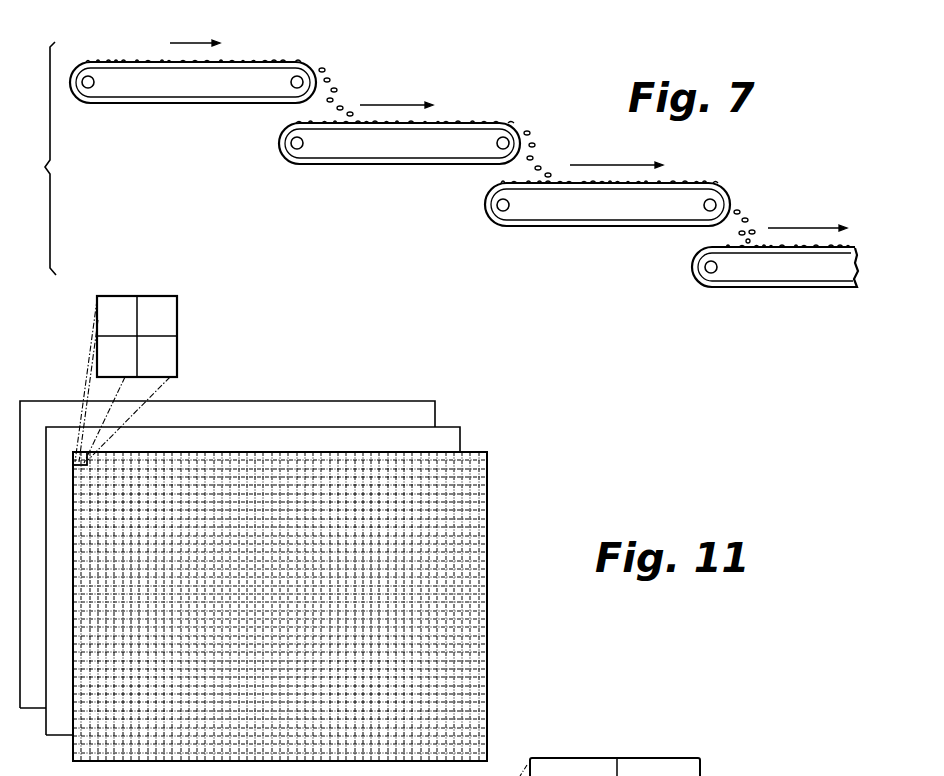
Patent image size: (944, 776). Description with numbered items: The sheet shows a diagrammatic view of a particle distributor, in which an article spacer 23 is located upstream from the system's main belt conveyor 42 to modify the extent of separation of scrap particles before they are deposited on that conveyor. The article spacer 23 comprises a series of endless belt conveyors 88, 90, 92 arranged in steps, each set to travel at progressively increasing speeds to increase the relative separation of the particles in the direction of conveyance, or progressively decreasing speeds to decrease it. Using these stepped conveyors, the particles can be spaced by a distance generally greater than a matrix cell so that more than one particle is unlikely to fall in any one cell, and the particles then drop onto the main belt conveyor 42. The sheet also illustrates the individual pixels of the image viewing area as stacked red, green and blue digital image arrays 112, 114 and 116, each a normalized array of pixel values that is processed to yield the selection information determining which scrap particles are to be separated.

In FIG. 7, the article spacer 23 is at (35, 158).
In FIG. 7, the endless belt conveyor 88 is at (300, 62).
In FIG. 7, the endless belt conveyor 90 is at (490, 122).
In FIG. 7, the endless belt conveyor 92 is at (550, 180).
In FIG. 7, the main belt conveyor 42 is at (752, 288).
In FIG. 11, the red digital image array 112 is at (208, 400).
In FIG. 11, the green digital image array 114 is at (265, 427).
In FIG. 11, the blue digital image array 116 is at (490, 462).